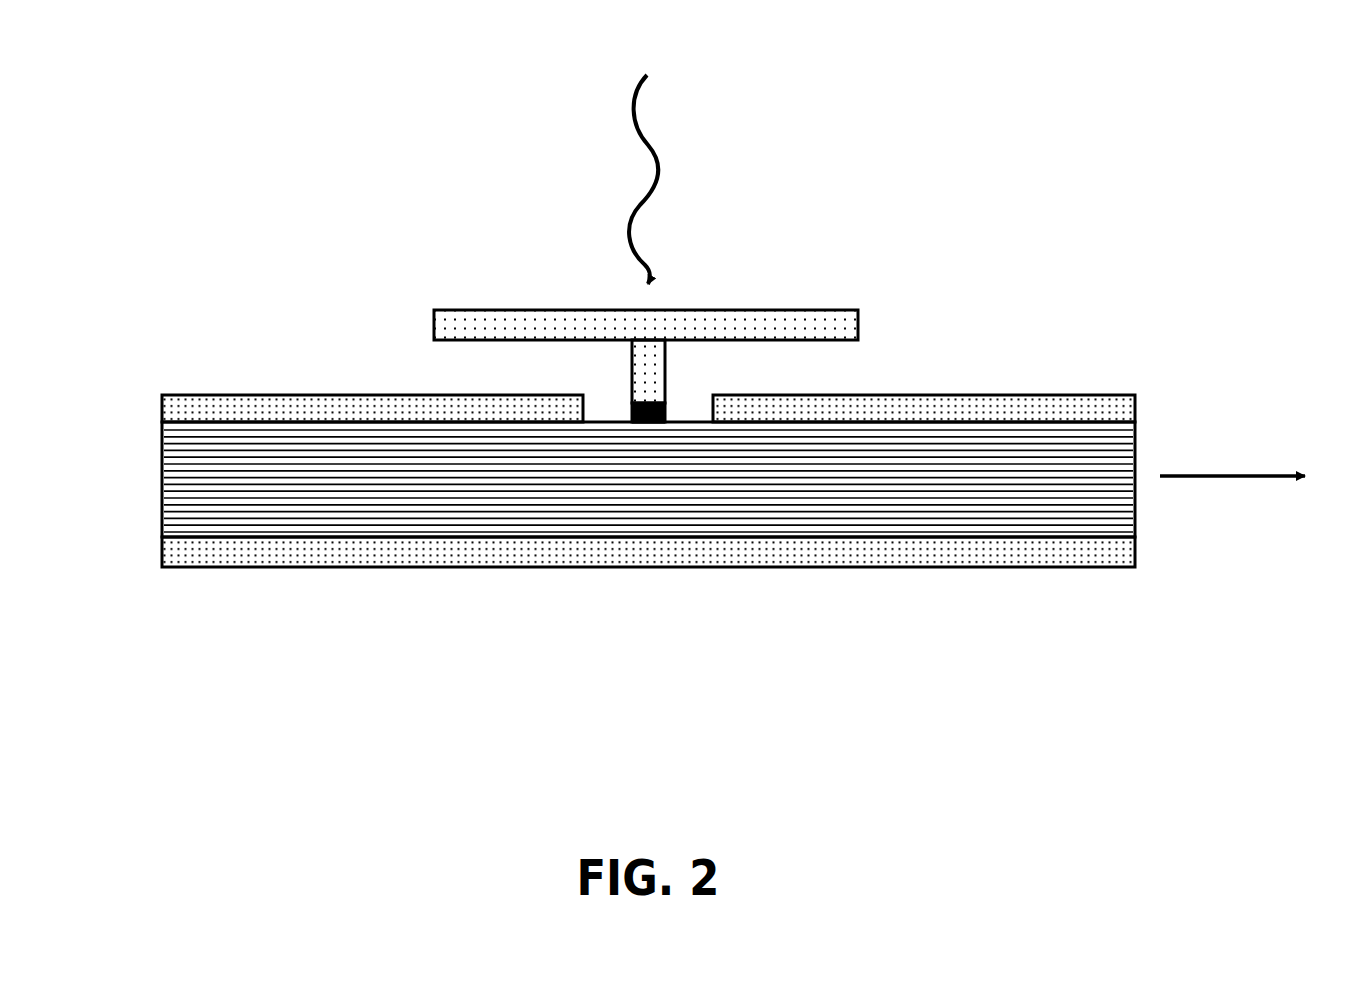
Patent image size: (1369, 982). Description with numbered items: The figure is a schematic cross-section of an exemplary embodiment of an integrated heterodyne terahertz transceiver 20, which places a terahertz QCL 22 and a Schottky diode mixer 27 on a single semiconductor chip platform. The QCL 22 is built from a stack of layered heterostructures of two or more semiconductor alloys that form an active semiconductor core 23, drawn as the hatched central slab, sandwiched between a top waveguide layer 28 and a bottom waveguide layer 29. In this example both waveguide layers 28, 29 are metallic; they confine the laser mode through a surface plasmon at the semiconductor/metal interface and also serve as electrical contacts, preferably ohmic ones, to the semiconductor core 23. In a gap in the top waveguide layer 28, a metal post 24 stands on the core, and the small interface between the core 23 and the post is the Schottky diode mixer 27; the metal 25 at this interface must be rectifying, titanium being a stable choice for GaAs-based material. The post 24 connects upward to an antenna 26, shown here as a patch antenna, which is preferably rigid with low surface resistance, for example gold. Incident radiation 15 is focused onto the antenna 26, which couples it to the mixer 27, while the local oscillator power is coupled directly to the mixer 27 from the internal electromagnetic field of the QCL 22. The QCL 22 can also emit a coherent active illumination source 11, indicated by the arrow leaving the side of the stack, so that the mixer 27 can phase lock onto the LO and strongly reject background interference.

The integrated heterodyne terahertz transceiver 20 is at (238, 145).
The terahertz QCL 22 is at (131, 376).
The top waveguide layer 28 is at (333, 395).
The active semiconductor core 23 is at (831, 488).
The bottom waveguide layer 29 is at (332, 572).
The Schottky diode mixer 27 is at (642, 434).
The metal 25 is at (632, 415).
The metal post 24 is at (665, 370).
The antenna 26 is at (818, 312).
The incident radiation 15 is at (647, 158).
The coherent active illumination source 11 is at (1260, 478).